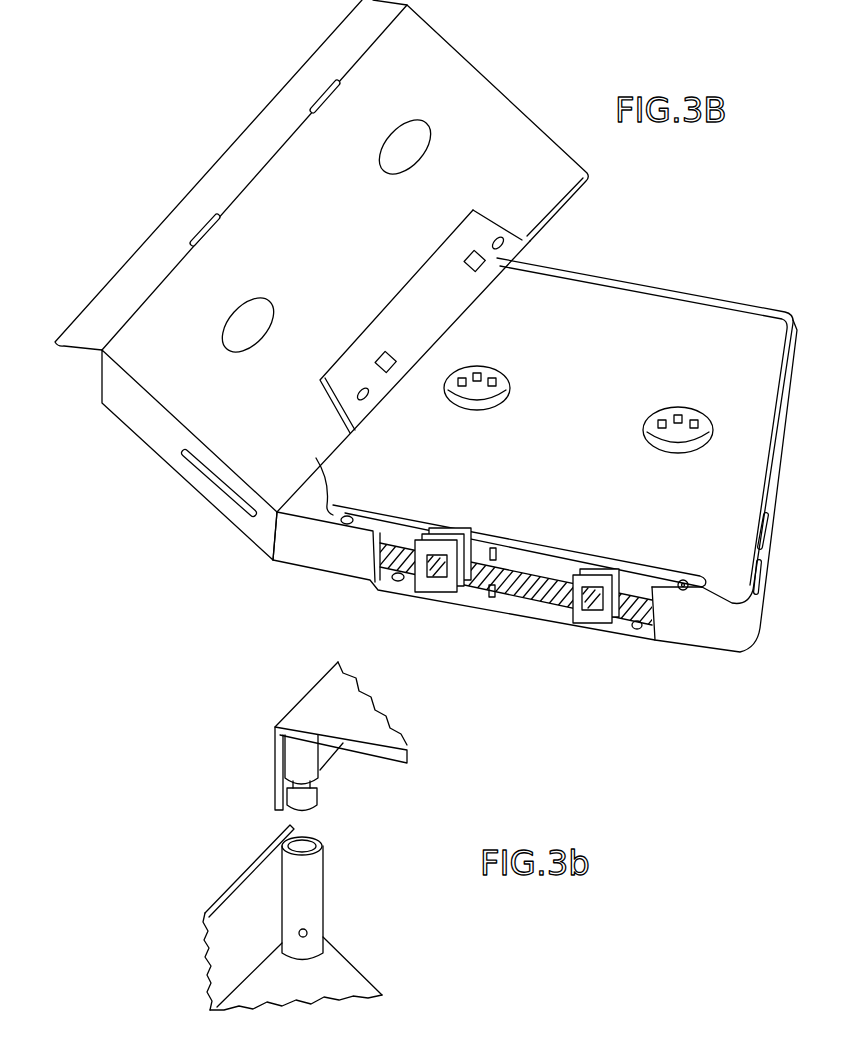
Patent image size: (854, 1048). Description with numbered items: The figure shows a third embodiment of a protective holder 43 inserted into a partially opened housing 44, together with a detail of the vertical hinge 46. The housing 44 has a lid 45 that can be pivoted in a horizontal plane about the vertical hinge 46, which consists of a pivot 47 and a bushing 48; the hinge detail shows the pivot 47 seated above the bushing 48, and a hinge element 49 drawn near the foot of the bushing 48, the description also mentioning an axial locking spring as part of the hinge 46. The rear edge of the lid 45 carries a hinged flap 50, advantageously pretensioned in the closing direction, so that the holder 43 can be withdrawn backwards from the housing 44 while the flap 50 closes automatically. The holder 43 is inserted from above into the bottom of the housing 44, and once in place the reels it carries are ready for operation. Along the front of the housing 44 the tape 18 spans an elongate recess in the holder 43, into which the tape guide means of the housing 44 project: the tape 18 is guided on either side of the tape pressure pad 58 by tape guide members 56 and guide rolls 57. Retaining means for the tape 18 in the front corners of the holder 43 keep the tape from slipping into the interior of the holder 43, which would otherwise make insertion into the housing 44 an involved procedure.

In FIG. 3B, the tape 18 is at (547, 600).
In FIG. 3B, the holder 43 is at (632, 296).
In FIG. 3B, the housing 44 is at (244, 573).
In FIG. 3B, the lid 45 is at (498, 97).
In FIG. 3B, the vertical hinge 46 is at (278, 500).
In FIG. 3b, the vertical hinge 46 is at (333, 823).
In FIG. 3b, the pivot 47 is at (297, 760).
In FIG. 3b, the bushing 48 is at (314, 892).
In FIG. 3b, the hole 49 is at (310, 935).
In FIG. 3B, the hinged flap 50 is at (262, 115).
In FIG. 3B, the tape guide members 56 is at (597, 622).
In FIG. 3B, the guide rolls 57 is at (681, 592).
In FIG. 3B, the tape pressure pad 58 is at (527, 567).